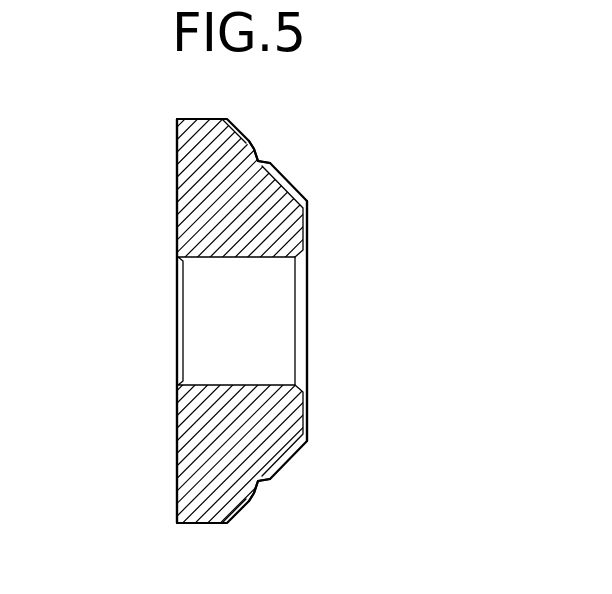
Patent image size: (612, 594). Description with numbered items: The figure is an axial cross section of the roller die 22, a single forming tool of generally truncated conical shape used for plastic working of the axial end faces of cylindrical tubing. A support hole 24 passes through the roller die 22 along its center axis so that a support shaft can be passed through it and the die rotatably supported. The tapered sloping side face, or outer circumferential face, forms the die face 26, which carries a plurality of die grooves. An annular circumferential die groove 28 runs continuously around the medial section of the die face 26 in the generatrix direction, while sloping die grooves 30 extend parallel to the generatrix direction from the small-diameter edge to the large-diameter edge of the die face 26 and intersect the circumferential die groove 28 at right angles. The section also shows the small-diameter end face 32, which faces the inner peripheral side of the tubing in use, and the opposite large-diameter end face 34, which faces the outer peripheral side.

The roller die 22 is at (136, 166).
The support hole 24 is at (203, 259).
The die face 26 is at (302, 178).
The circumferential die groove 28 is at (257, 484).
The sloping die grooves 30 is at (248, 145).
The small-diameter end face 32 is at (308, 224).
The large-diameter end face 34 is at (177, 437).